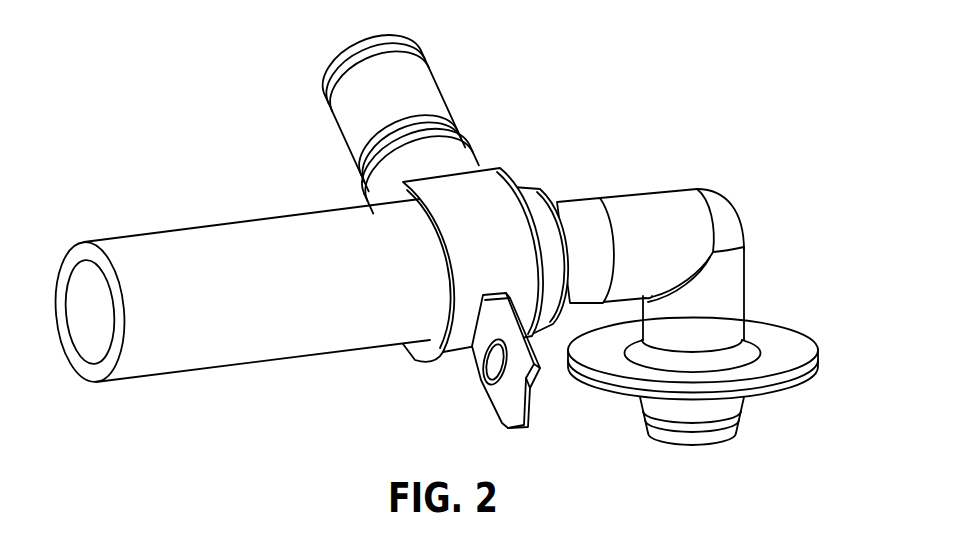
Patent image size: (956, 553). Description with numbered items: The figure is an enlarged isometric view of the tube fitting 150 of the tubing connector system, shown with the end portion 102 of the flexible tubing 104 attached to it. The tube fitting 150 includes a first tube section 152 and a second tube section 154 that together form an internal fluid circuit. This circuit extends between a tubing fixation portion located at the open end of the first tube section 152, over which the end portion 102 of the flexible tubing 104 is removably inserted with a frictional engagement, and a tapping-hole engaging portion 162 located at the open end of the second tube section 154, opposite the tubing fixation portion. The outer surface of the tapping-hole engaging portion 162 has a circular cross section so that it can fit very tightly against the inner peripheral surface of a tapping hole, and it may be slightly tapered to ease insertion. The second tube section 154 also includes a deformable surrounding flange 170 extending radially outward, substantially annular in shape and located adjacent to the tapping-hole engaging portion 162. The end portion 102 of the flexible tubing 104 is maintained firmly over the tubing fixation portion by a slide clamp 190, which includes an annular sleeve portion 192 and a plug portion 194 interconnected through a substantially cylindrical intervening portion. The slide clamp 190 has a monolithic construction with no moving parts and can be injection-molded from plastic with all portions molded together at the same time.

The end portion 102 is at (441, 225).
The flexible tubing 104 is at (160, 252).
The tube fitting 150 is at (673, 252).
The first tube section 152 is at (643, 195).
The second tube section 154 is at (746, 256).
The tapping-hole engaging portion 162 is at (648, 408).
The deformable surrounding flange 170 is at (777, 337).
The slide clamp 190 is at (433, 221).
The annular sleeve portion 192 is at (443, 356).
The plug portion 194 is at (423, 88).